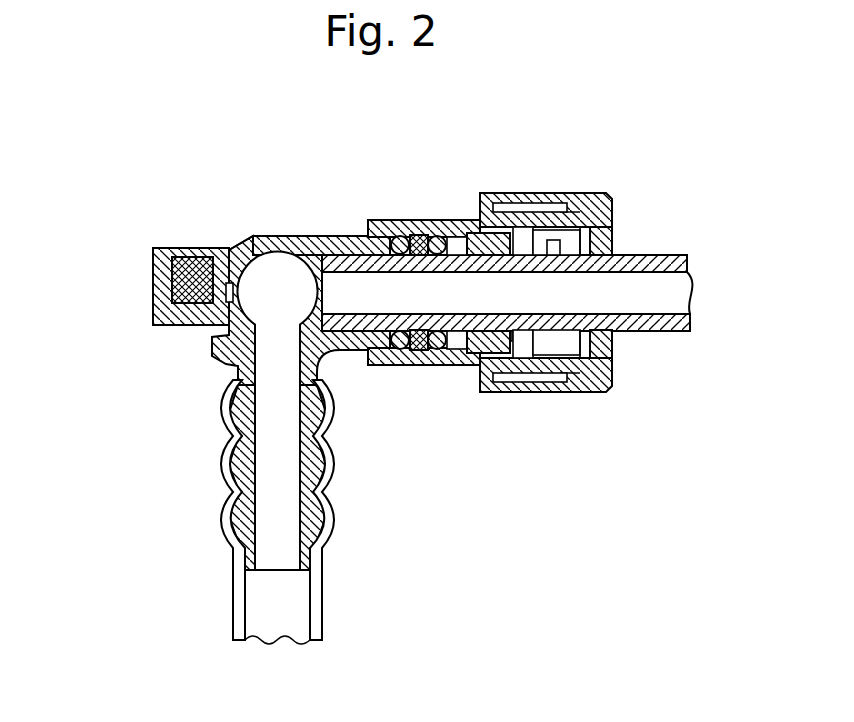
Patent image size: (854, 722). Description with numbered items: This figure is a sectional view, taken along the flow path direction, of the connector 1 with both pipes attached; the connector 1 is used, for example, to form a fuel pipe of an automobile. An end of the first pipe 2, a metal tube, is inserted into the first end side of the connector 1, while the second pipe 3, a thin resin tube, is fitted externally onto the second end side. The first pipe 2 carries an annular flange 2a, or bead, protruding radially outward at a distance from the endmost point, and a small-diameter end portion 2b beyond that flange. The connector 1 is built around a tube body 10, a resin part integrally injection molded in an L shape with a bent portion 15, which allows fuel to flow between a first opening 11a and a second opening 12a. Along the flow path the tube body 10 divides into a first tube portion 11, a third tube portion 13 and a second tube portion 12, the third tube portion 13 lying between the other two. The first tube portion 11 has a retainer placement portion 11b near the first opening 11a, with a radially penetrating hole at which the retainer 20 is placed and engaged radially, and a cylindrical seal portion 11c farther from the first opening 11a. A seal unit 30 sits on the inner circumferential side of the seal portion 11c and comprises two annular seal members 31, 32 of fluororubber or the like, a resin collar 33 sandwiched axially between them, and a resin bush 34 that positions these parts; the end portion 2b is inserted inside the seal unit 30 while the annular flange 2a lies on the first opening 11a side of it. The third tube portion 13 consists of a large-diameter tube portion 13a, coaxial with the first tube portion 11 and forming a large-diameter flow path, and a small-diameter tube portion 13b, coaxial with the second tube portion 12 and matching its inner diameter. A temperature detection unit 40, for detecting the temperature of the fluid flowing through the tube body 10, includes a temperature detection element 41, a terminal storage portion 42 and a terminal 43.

The connector 1 is at (618, 182).
The first pipe 2 is at (660, 337).
The annular flange 2a is at (547, 340).
The end portion 2b is at (500, 335).
The second pipe 3 is at (233, 617).
The tube body 10 is at (350, 229).
The first tube portion 11 is at (448, 220).
The first opening 11a is at (612, 230).
The retainer placement portion 11b is at (567, 208).
The seal portion 11c is at (403, 222).
The second tube portion 12 is at (248, 456).
The second opening 12a is at (280, 570).
The third tube portion 13 is at (308, 168).
The large-diameter tube portion 13a is at (307, 248).
The small-diameter tube portion 13b is at (247, 356).
The bent portion 15 is at (242, 242).
The retainer 20 is at (513, 194).
The seal unit 30 is at (490, 435).
The annular seal member 31 is at (395, 343).
The annular seal member 32 is at (430, 343).
The collar 33 is at (418, 343).
The bush 34 is at (483, 343).
The temperature detection unit 40 is at (90, 258).
The temperature detection element 41 is at (228, 305).
The terminal storage portion 42 is at (160, 313).
The terminal 43 is at (180, 284).